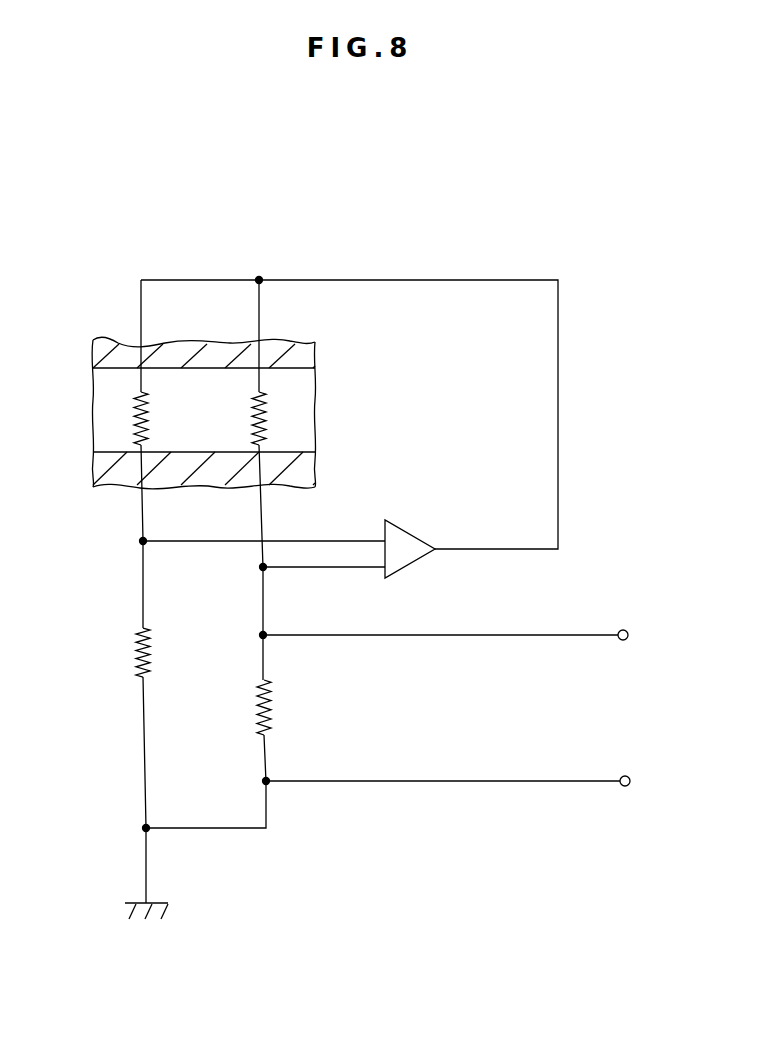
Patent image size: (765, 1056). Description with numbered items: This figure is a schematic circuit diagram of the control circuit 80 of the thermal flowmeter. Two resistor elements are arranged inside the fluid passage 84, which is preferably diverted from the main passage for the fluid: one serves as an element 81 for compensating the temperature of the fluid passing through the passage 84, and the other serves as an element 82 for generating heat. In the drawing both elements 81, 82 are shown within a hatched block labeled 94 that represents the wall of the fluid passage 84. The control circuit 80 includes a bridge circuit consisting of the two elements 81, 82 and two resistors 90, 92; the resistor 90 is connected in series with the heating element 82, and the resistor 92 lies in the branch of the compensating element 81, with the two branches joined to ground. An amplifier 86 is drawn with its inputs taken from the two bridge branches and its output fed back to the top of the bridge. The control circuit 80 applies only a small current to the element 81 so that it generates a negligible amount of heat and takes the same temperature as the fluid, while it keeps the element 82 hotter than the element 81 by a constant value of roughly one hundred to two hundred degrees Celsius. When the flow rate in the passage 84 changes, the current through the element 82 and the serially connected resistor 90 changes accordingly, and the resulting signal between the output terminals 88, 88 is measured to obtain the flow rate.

The control circuit 80 is at (607, 362).
The element for compensating a temperature of a fluid 81 is at (131, 422).
The element for generating heat 82 is at (276, 425).
The fluid passage 84 is at (186, 419).
The amplifier 86 is at (420, 539).
The output terminal 88 is at (627, 628).
The resistor 90 is at (273, 702).
The resistor 92 is at (135, 656).
The sensor housing 94 is at (107, 338).